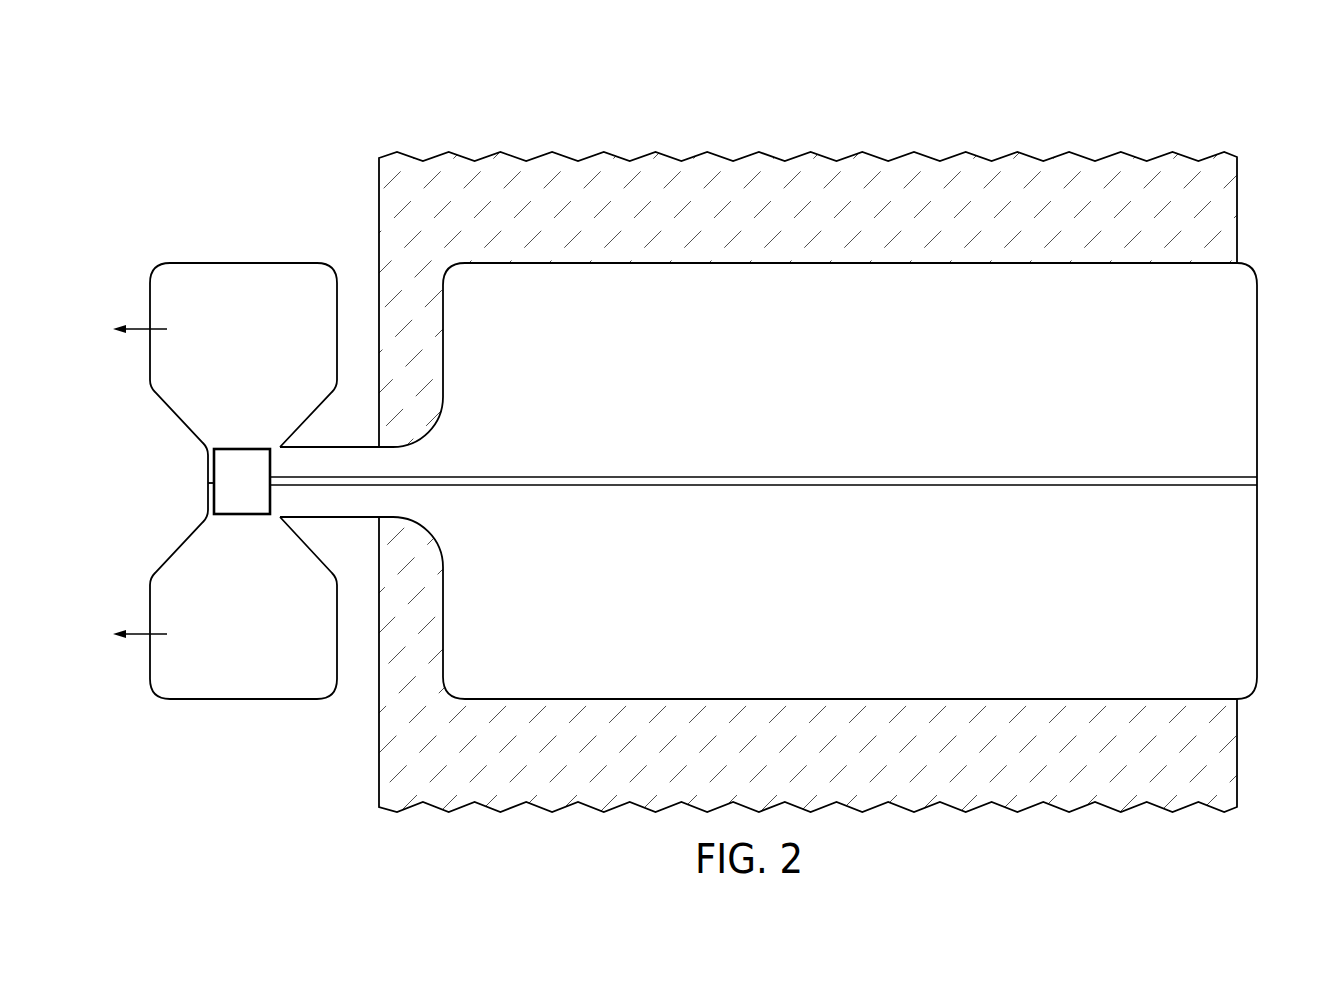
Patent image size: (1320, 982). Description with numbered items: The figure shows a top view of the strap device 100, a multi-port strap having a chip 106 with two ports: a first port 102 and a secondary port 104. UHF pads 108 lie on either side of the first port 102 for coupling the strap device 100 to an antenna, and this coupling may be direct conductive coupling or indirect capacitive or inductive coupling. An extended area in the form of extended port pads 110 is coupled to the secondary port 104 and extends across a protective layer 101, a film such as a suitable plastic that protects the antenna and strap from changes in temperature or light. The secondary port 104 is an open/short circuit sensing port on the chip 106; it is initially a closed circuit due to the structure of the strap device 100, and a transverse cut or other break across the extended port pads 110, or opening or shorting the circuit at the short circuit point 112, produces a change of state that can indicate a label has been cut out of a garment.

The strap device 100 is at (977, 263).
The protective layer 101 is at (566, 155).
The first port 102 is at (206, 483).
The secondary port 104 is at (278, 516).
The chip 106 is at (240, 449).
The UHF pads 108 is at (237, 263).
The extended port pads 110 is at (853, 263).
The short circuit point 112 is at (1258, 483).